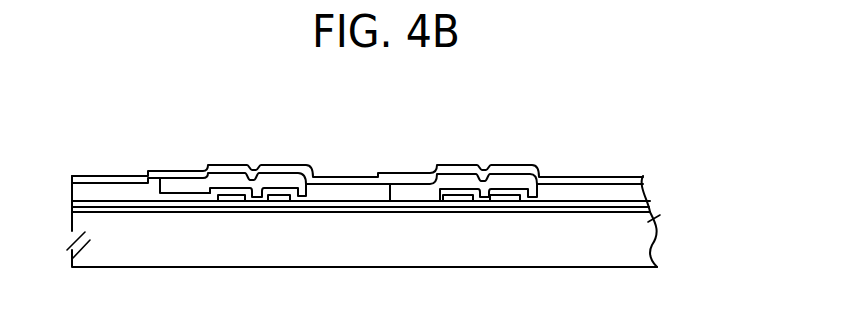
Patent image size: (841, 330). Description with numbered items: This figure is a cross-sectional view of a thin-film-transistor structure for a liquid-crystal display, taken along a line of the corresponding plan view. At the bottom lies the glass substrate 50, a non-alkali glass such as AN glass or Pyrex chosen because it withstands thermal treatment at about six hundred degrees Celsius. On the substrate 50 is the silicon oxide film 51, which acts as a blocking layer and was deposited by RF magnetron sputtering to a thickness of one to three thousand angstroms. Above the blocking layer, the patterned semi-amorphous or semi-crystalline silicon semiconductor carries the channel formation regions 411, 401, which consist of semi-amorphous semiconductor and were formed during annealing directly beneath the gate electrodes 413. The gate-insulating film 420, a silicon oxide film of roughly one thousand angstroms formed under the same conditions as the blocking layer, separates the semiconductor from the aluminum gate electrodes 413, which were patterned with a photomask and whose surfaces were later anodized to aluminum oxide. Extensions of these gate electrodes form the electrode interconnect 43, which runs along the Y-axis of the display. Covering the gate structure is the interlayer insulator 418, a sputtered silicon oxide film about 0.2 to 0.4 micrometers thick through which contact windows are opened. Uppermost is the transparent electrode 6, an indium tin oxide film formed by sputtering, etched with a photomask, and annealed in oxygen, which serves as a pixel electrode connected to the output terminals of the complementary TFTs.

The glass substrate 50 is at (655, 238).
The silicon oxide film 51 is at (650, 211).
The gate-insulating film 420 is at (330, 200).
The interlayer insulator 418 is at (278, 170).
The transparent electrode 6 is at (368, 182).
The electrode interconnect 43 is at (176, 192).
The gate electrode 413 is at (227, 183).
The channel formation region 411 is at (232, 203).
The channel formation region 401 is at (282, 203).